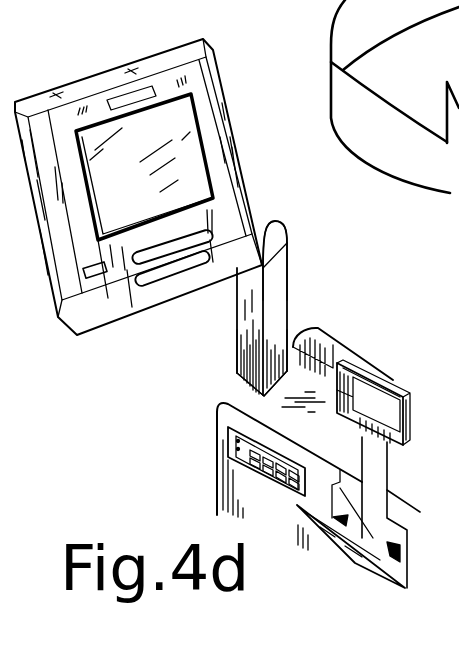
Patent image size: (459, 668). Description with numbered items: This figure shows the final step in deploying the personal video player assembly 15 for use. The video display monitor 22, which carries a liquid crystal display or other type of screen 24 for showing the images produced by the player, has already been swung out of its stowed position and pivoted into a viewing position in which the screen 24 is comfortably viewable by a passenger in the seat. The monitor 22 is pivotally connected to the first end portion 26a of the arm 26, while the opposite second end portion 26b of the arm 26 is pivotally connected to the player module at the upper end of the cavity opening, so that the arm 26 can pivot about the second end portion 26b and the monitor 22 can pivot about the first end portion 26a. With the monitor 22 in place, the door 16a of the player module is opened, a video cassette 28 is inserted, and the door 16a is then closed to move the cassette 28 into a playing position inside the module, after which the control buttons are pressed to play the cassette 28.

The video display monitor 22 is at (95, 78).
The screen 24 is at (190, 143).
The arm 26 is at (283, 316).
The first end portion 26a is at (297, 242).
The second end portion 26b is at (217, 377).
The personal video player assembly 15 is at (188, 435).
The video cassette 28 is at (390, 386).
The door 16a is at (362, 553).